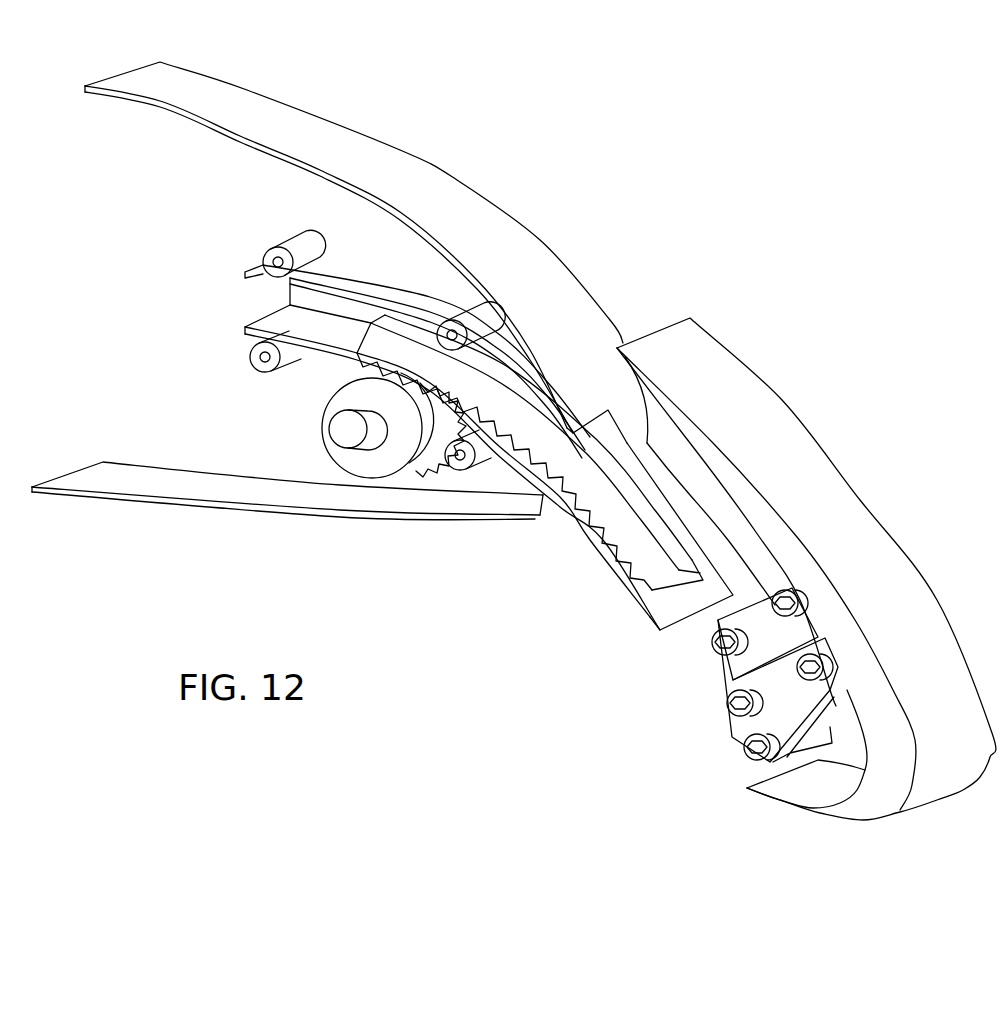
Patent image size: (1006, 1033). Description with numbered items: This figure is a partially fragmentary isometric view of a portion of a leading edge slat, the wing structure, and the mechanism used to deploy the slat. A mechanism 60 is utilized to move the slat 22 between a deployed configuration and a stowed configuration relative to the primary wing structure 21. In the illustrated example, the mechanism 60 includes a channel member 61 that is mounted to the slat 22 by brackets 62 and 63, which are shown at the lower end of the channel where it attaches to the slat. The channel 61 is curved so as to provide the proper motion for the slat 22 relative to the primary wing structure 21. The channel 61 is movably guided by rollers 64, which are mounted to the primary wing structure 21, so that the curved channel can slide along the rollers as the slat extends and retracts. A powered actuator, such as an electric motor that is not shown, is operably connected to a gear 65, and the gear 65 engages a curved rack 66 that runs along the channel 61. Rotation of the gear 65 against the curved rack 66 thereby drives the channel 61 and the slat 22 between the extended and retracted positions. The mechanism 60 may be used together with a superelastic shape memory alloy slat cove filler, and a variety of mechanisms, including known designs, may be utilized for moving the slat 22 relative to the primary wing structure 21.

The primary wing structure 21 is at (453, 180).
The slat 22 is at (782, 400).
The mechanism 60 is at (205, 346).
The channel member 61 is at (390, 273).
The bracket 62 is at (710, 683).
The bracket 63 is at (747, 788).
The rollers 64 is at (302, 248).
The gear 65 is at (420, 465).
The curved rack 66 is at (612, 525).